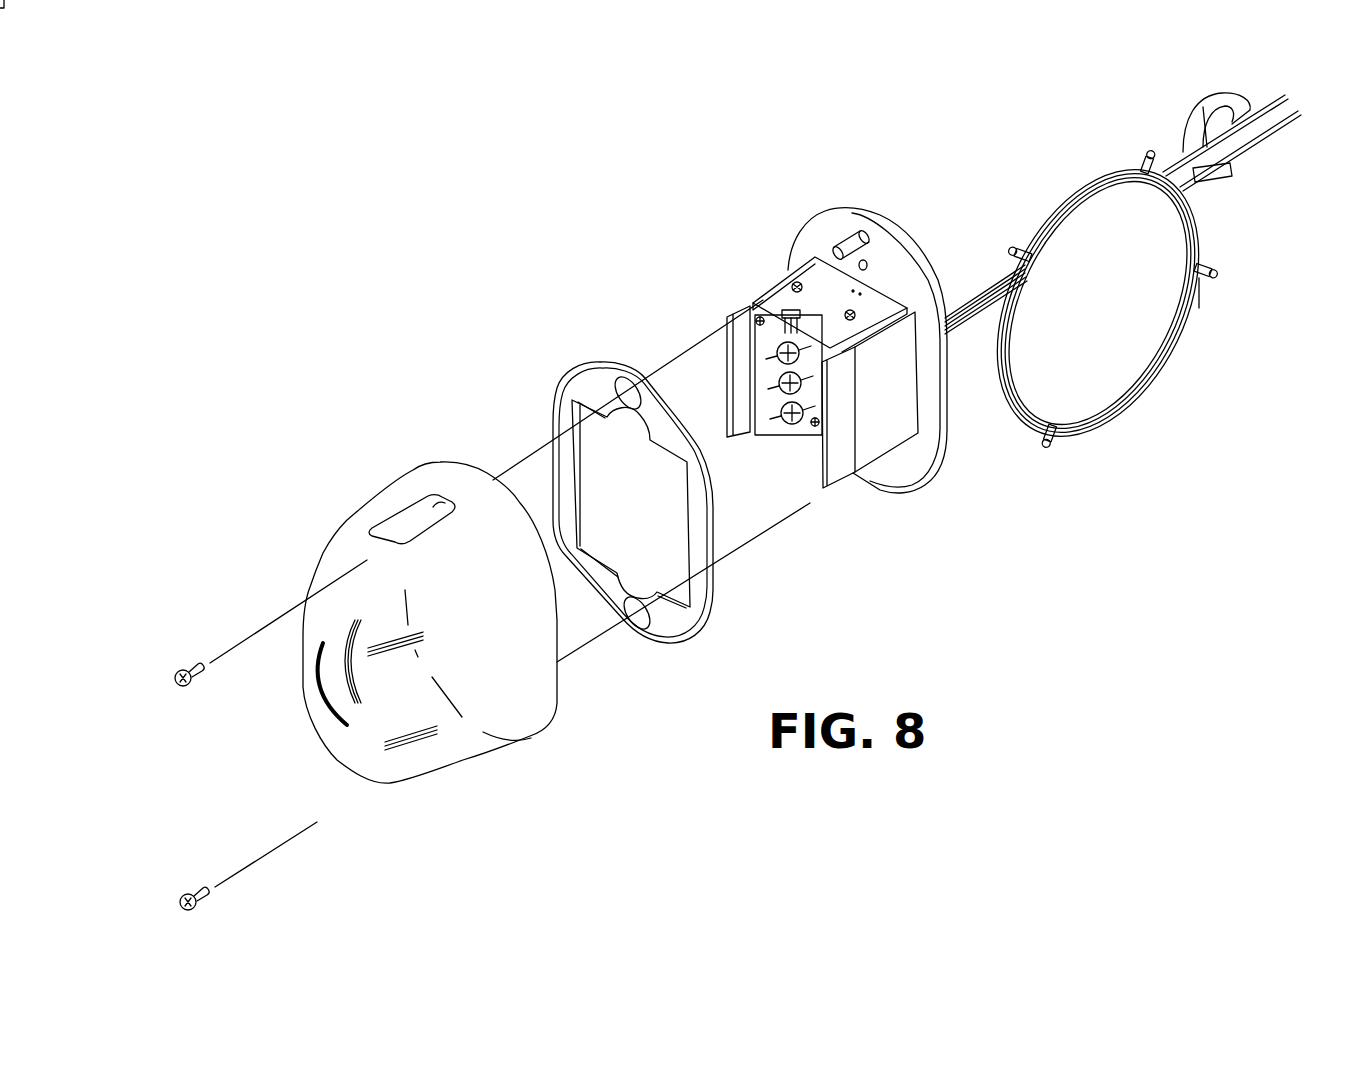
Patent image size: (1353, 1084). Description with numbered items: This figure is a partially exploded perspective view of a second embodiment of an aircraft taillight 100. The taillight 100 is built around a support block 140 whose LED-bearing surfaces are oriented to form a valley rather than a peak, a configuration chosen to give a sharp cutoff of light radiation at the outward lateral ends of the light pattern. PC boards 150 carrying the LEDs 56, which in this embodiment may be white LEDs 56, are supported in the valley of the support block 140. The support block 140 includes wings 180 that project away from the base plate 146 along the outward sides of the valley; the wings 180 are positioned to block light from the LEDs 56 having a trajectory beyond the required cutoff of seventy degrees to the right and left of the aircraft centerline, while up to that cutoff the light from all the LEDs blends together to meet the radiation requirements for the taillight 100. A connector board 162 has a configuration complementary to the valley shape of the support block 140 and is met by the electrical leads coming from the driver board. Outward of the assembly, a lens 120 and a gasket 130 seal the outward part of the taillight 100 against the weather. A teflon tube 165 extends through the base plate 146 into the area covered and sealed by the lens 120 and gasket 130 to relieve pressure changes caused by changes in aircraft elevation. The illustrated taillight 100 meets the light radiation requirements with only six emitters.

The LEDs 56 is at (793, 422).
The aircraft taillight 100 is at (683, 293).
The lens 120 is at (360, 510).
The gasket 130 is at (580, 365).
The support block 140 is at (877, 427).
The base plate 146 is at (817, 213).
The PC boards 150 is at (773, 433).
The connector board 162 is at (790, 267).
The teflon tube 165 is at (1200, 310).
The wings 180 is at (723, 387).